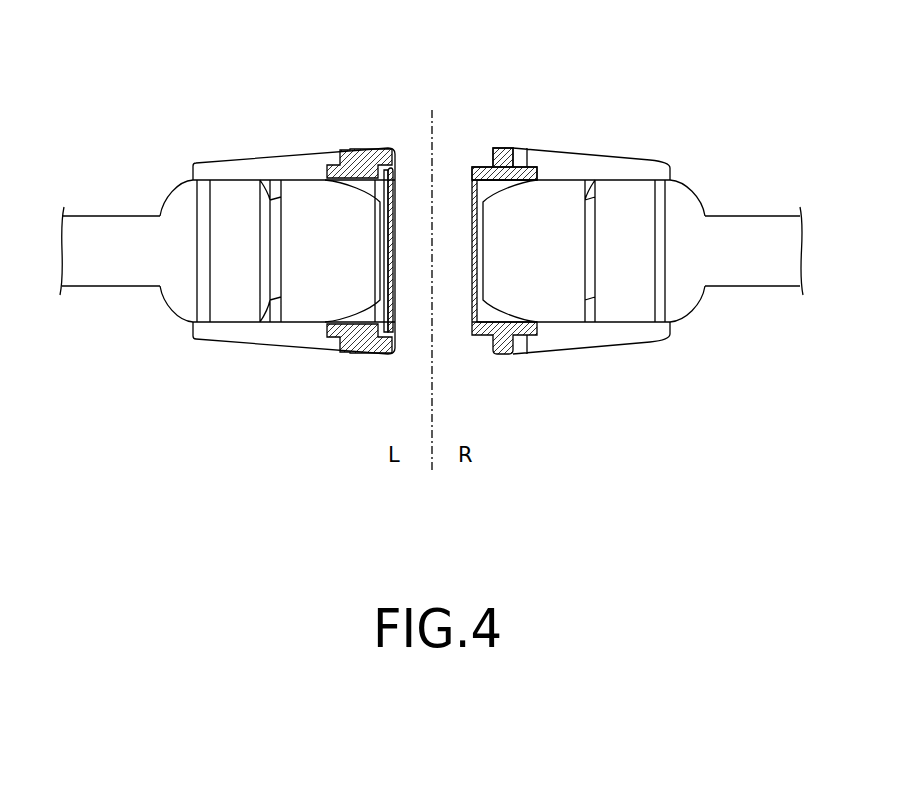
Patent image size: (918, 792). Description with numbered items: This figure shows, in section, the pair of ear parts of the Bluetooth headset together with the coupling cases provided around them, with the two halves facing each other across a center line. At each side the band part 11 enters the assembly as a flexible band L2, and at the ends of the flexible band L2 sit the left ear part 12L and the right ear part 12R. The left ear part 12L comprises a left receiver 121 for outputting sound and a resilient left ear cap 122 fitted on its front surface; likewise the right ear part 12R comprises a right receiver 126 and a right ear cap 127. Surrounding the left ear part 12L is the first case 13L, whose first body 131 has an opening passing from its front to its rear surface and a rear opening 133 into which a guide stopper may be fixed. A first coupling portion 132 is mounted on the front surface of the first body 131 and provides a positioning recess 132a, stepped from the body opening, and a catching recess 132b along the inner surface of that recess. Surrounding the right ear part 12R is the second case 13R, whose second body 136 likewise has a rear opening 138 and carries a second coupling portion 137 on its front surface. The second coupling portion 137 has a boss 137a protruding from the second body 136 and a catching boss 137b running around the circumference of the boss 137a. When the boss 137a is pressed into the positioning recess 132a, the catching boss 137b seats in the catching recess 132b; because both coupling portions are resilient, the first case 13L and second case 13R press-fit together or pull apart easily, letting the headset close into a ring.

The band part 11 is at (108, 227).
The flexible band L2 is at (110, 280).
The left ear part 12L is at (292, 215).
The right ear part 12R is at (603, 213).
The first case 13L is at (306, 215).
The second case 13R is at (595, 213).
The left receiver 121 is at (233, 195).
The left ear cap 122 is at (312, 197).
The right receiver 126 is at (642, 197).
The right ear cap 127 is at (560, 195).
The first body 131 is at (286, 340).
The first coupling portion 132 is at (387, 215).
The positioning recess 132a is at (394, 173).
The catching recess 132b is at (376, 167).
The rear opening 133 is at (290, 197).
The second body 136 is at (607, 341).
The second coupling portion 137 is at (515, 213).
The boss 137a is at (496, 160).
The catching boss 137b is at (483, 166).
The rear opening 138 is at (603, 193).